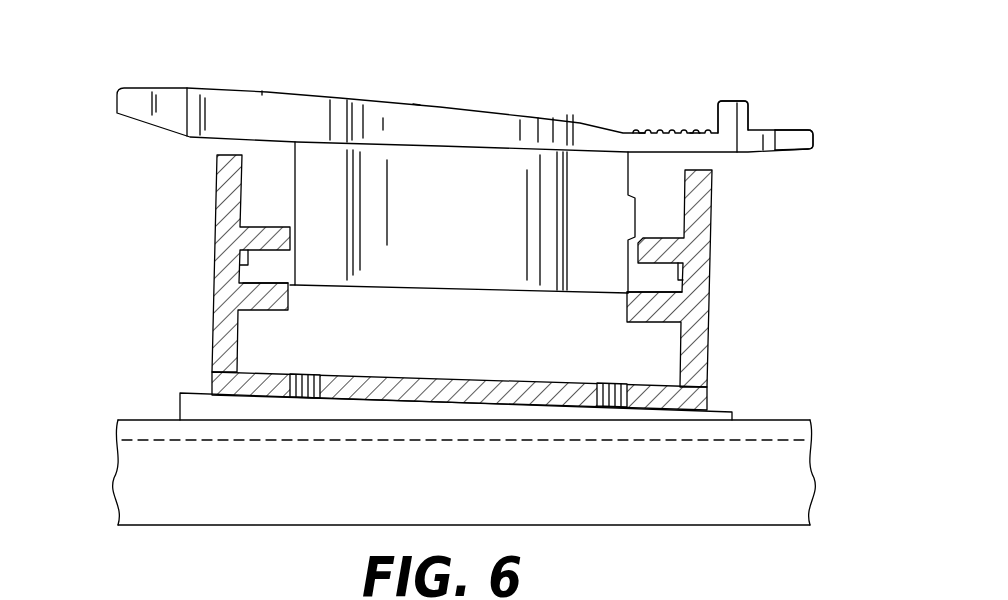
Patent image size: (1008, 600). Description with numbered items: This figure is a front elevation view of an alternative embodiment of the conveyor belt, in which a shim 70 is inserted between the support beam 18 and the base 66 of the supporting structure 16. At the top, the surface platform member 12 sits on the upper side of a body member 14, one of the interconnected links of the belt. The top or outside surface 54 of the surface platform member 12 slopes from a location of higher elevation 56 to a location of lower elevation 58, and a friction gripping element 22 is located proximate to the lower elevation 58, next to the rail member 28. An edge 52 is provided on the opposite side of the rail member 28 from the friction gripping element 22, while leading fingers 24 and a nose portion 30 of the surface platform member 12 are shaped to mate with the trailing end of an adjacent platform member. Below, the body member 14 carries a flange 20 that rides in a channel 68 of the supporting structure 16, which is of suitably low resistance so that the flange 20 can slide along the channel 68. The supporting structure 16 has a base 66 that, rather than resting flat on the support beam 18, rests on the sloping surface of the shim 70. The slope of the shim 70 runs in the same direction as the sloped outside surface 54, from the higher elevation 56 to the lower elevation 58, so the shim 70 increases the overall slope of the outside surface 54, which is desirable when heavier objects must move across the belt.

The surface platform member 12 is at (298, 117).
The body member 14 is at (387, 200).
The supporting structure 16 is at (700, 286).
The support beam 18 is at (148, 483).
The flange 20 is at (245, 281).
The friction gripping element 22 is at (642, 132).
The leading fingers 24 is at (166, 95).
The rail member 28 is at (720, 112).
The nose portion 30 is at (485, 127).
The edge 52 is at (790, 130).
The outside surface 54 is at (416, 106).
The location of higher elevation 56 is at (265, 90).
The location of lower elevation 58 is at (694, 132).
The base 66 is at (218, 385).
The channel 68 is at (247, 266).
The shim 70 is at (192, 408).